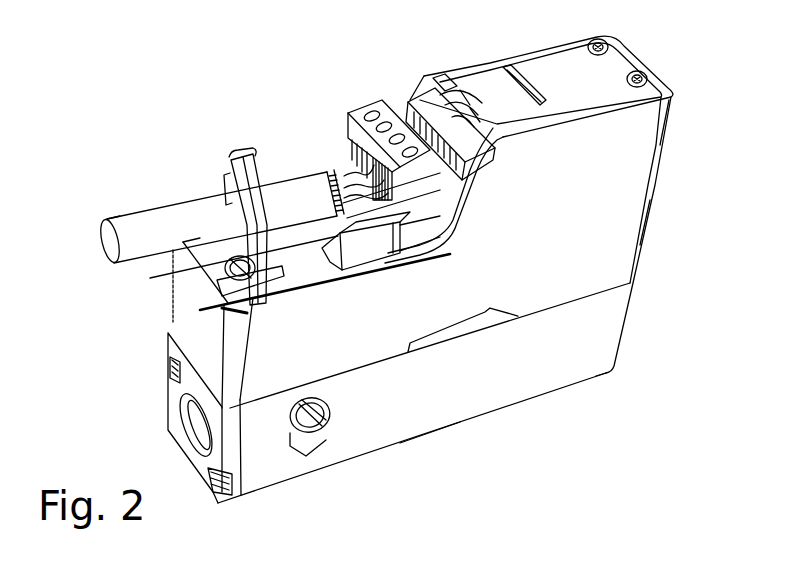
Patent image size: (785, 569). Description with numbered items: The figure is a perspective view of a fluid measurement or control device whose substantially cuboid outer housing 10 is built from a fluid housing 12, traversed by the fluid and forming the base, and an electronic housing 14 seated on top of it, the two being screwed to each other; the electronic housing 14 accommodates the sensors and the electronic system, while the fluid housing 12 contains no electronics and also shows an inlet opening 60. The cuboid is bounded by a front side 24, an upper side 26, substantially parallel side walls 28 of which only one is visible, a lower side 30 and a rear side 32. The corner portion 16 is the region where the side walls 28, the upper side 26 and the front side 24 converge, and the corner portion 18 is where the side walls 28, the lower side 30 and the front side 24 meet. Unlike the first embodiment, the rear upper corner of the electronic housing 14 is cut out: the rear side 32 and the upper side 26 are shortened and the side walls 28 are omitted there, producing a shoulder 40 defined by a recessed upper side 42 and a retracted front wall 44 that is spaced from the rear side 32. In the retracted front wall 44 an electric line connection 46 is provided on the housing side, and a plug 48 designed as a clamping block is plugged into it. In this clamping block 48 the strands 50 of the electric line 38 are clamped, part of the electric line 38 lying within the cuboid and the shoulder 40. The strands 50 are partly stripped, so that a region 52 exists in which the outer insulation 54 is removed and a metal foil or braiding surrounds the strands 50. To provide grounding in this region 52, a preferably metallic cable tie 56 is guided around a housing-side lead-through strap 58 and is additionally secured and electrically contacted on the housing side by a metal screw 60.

The outer housing 10 is at (668, 182).
The fluid housing 12 is at (533, 376).
The electronic housing 14 is at (550, 272).
The corner portion 16 is at (557, 70).
The corner portion 18 is at (629, 377).
The front side 24 is at (684, 109).
The upper side 26 is at (547, 62).
The side walls 28 is at (610, 243).
The lower side 30 is at (450, 442).
The rear side 32 is at (182, 316).
The electric line 38 is at (160, 209).
The shoulder 40 is at (310, 138).
The recessed upper side 42 is at (317, 267).
The retracted front wall 44 is at (497, 158).
The electric line connection 46 is at (410, 92).
The plug 48 is at (355, 110).
The strands 50 is at (341, 157).
The region 52 is at (285, 182).
The outer insulation 54 is at (166, 254).
The cable tie 56 is at (237, 157).
The lead-through strap 58 is at (175, 284).
The metal screw 60 is at (258, 303).